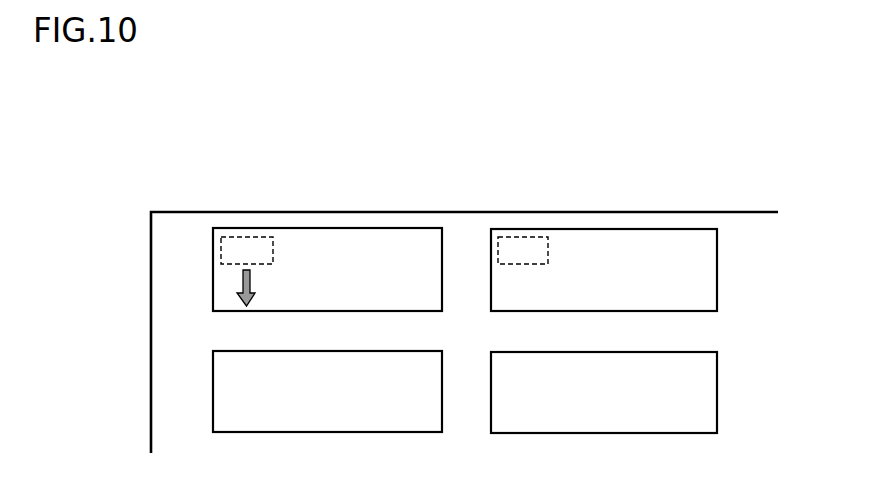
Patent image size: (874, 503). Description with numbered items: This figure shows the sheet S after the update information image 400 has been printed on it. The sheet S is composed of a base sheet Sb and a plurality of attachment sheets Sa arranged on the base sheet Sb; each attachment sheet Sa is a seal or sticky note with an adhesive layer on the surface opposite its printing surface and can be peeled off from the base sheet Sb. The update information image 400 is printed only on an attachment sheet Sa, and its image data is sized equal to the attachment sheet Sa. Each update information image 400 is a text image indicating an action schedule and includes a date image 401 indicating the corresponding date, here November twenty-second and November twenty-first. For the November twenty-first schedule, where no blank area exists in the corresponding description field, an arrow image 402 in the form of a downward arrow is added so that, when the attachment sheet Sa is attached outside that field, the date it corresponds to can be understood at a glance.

The sheet S is at (760, 191).
The base sheet Sb is at (172, 222).
The attachment sheet Sa is at (407, 228).
The update information image 400 is at (418, 288).
The date image 401 is at (248, 237).
The arrow image 402 is at (238, 282).